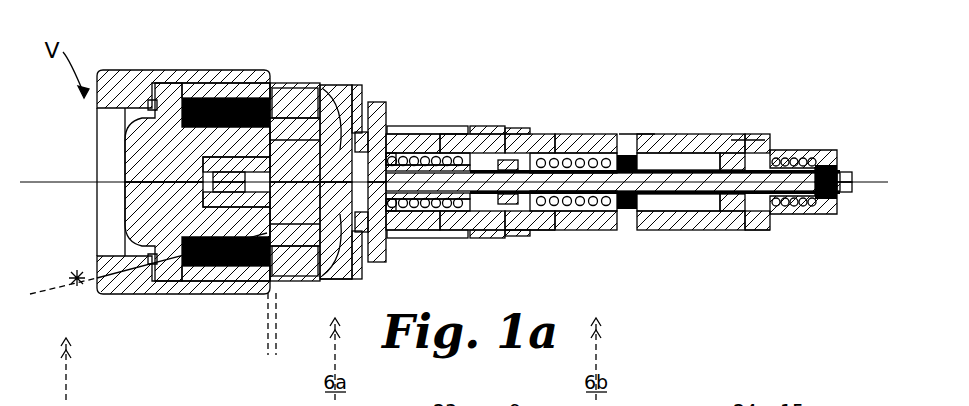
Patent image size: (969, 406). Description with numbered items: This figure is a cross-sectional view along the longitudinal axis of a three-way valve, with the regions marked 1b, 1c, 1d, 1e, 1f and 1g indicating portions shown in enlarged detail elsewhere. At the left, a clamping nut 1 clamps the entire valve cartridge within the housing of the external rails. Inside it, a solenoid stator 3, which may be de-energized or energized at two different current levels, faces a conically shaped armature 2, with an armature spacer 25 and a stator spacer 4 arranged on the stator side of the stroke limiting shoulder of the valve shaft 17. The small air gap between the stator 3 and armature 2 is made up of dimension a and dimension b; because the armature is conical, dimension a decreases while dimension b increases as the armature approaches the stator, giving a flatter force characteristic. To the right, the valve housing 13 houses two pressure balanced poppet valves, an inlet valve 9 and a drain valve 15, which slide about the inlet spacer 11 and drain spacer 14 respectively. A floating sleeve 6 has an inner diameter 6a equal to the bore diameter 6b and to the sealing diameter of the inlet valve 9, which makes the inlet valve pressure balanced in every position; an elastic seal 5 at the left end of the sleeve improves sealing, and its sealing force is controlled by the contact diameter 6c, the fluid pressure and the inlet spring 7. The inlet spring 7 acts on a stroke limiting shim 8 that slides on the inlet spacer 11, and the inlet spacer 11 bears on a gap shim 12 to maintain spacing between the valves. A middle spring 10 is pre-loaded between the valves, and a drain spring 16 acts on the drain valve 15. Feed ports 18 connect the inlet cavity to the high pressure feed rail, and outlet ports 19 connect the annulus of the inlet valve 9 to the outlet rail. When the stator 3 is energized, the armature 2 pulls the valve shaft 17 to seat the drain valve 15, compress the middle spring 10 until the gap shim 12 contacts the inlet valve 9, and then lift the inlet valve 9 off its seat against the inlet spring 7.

The clamping nut 1 is at (116, 70).
The housing section 1b is at (347, 295).
The housing section 1c is at (500, 250).
The housing section 1d is at (735, 245).
The housing section 1e is at (645, 58).
The housing section 1f is at (440, 150).
The housing section 1g is at (757, 81).
The armature 2 is at (269, 100).
The solenoid stator 3 is at (290, 83).
The armature spacer 25 is at (318, 88).
The stator spacer 4 is at (340, 85).
The elastic seal 5 is at (362, 86).
The floating sleeve 6 is at (386, 128).
The inner diameter 6a is at (448, 236).
The bore diameter 6b is at (532, 136).
The contact diameter 6c is at (388, 238).
The inlet spring 7 is at (418, 128).
The stroke limiting shim 8 is at (472, 126).
The inlet valve 9 is at (512, 128).
The middle spring 10 is at (578, 140).
The inlet spacer 11 is at (590, 156).
The gap shim 12 is at (622, 157).
The valve housing 13 is at (655, 136).
The drain spacer 14 is at (697, 172).
The drain valve 15 is at (790, 150).
The drain spring 16 is at (808, 160).
The valve shaft 17 is at (850, 172).
The feed ports 18 is at (425, 232).
The outlet ports 19 is at (518, 240).
The air gap dimension a is at (48, 280).
The air gap dimension b is at (82, 284).